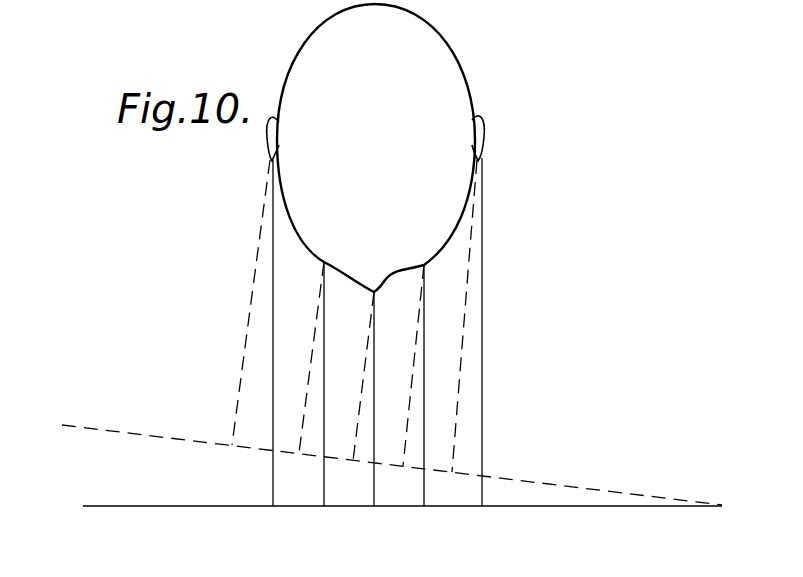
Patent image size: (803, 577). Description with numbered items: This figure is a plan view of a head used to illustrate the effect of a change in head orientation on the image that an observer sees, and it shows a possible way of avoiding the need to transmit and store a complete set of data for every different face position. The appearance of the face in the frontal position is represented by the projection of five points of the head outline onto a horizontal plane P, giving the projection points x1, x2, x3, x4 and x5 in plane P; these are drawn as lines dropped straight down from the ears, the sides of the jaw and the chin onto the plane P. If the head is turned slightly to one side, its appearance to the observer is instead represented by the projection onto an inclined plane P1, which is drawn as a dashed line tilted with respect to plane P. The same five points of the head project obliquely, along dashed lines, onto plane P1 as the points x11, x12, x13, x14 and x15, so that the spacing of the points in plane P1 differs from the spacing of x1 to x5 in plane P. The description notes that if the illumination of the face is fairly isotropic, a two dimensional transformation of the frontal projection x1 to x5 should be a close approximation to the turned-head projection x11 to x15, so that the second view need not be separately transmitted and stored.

The plane P is at (379, 520).
The plane P1 is at (377, 452).
The projection point x1 is at (277, 349).
The projection point x2 is at (329, 400).
The projection point x3 is at (379, 415).
The projection point x4 is at (429, 401).
The projection point x5 is at (487, 348).
The projection point x11 is at (243, 318).
The projection point x12 is at (305, 374).
The projection point x13 is at (358, 392).
The projection point x14 is at (407, 381).
The projection point x15 is at (459, 330).